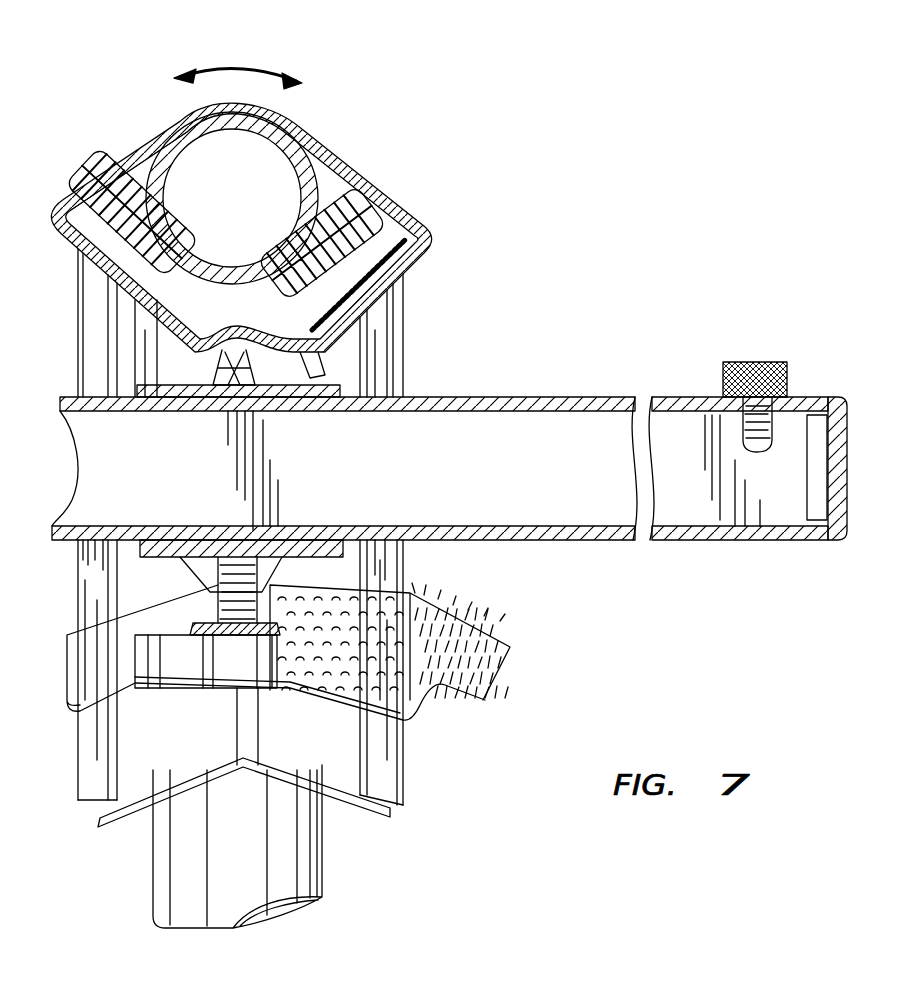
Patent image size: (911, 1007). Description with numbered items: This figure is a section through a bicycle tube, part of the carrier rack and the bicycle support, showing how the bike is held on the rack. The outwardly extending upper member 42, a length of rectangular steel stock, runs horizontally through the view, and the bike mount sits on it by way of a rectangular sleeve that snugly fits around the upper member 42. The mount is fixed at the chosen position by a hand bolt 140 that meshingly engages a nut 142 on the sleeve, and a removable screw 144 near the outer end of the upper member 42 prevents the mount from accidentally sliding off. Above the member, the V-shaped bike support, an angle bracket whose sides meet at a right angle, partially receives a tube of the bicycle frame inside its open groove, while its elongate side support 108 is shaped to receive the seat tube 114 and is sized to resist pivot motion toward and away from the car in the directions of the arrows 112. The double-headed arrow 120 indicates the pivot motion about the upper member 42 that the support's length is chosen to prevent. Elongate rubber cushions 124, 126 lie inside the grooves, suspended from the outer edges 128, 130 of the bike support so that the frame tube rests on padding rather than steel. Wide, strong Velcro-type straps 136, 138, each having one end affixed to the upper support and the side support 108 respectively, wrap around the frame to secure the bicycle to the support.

The upper member 42 is at (590, 545).
The side support 108 is at (360, 808).
The arrows 112 is at (327, 150).
The seat tube 114 is at (326, 873).
The double-headed arrow 120 is at (255, 70).
The rubber cushion 124 is at (118, 180).
The rubber cushion 126 is at (368, 197).
The outer edge 128 is at (82, 265).
The outer edge 130 is at (406, 271).
The Velcro-type strap 136 is at (415, 217).
The Velcro-type strap 138 is at (487, 698).
The hand bolt 140 is at (165, 663).
The nut 142 is at (195, 562).
The removable screw 144 is at (737, 360).